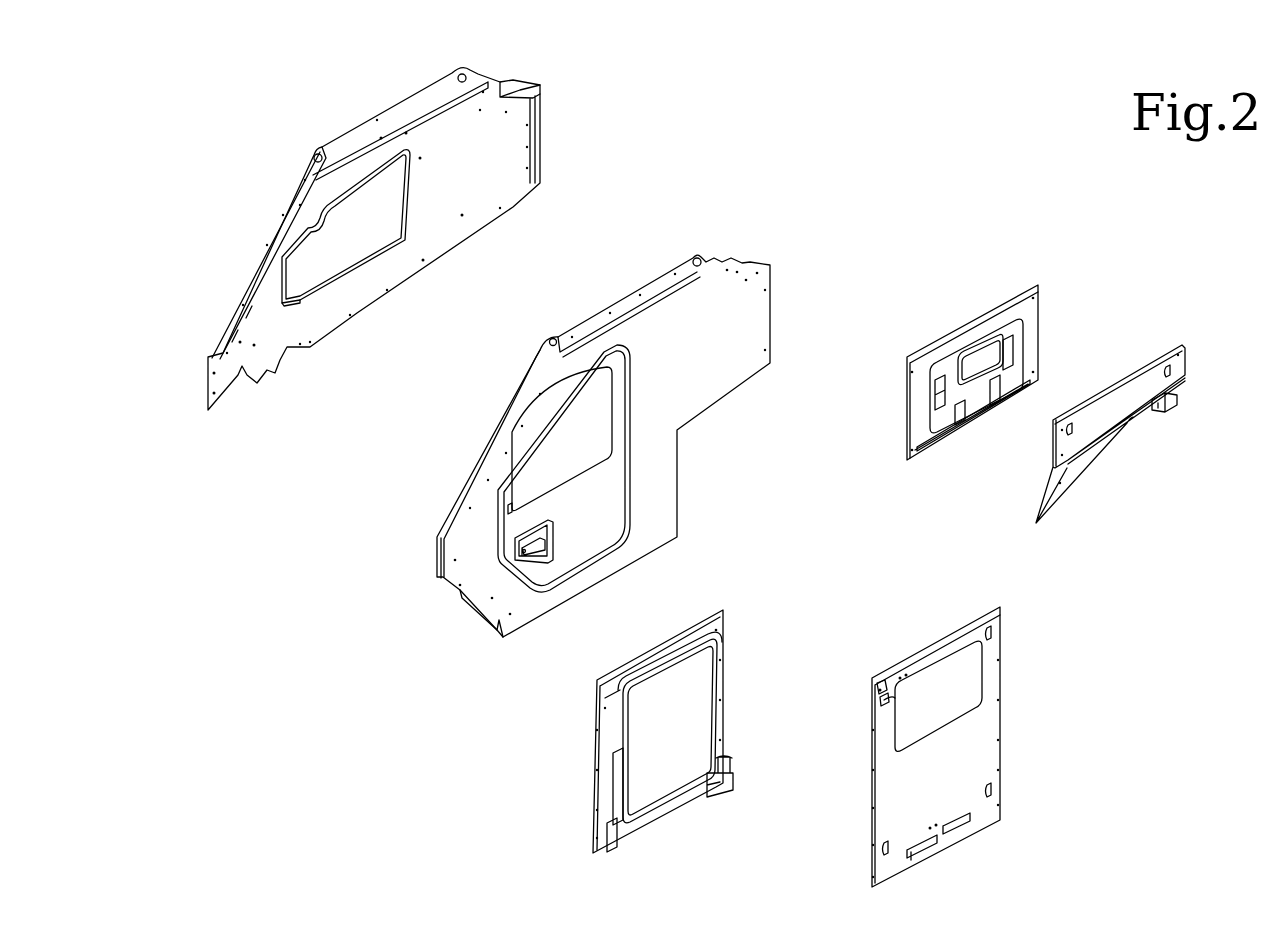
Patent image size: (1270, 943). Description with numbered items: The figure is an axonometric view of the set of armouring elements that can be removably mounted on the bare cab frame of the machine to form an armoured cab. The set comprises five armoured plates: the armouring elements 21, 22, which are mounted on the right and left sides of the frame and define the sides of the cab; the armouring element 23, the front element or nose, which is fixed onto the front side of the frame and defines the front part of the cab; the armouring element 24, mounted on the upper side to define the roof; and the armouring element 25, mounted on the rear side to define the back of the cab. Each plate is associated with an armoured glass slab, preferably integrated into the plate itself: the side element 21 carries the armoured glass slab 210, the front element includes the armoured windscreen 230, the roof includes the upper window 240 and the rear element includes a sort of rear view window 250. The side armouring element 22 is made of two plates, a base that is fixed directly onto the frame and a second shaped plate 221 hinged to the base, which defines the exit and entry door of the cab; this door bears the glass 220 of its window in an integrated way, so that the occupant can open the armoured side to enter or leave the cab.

The armouring element 21 is at (437, 140).
The armoured glass slab 210 is at (345, 228).
The armouring element 22 is at (663, 340).
The glass 220 is at (553, 427).
The second shaped plate 221 is at (597, 517).
The armouring element 23 is at (703, 632).
The armoured windscreen 230 is at (685, 697).
The armouring element 24 is at (970, 743).
The upper window 240 is at (945, 678).
The armouring element 25 is at (1033, 337).
The rear view window 250 is at (978, 358).